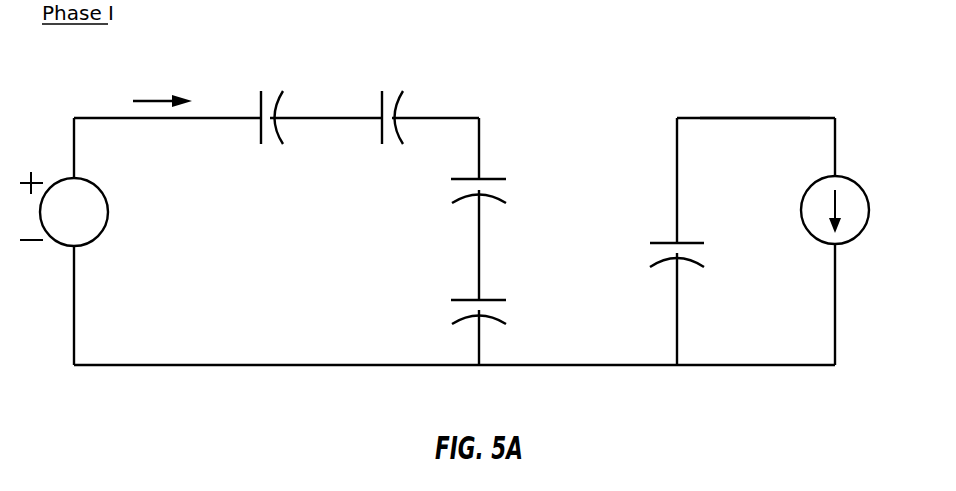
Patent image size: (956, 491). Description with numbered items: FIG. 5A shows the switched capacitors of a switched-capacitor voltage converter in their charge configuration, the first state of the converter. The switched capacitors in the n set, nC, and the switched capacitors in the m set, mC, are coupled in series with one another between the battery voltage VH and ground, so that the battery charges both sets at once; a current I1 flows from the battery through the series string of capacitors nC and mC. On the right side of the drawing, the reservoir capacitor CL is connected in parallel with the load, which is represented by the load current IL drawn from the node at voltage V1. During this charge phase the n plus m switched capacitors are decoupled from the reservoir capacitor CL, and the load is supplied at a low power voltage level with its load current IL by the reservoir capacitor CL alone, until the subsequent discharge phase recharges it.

The battery voltage VH is at (64, 209).
The input current I1 is at (162, 87).
The switched capacitors of the n set nC is at (332, 114).
The switched capacitors of the m set mC is at (465, 251).
The reservoir capacitor CL is at (695, 250).
The output voltage node V1 is at (755, 98).
The load current IL is at (838, 229).